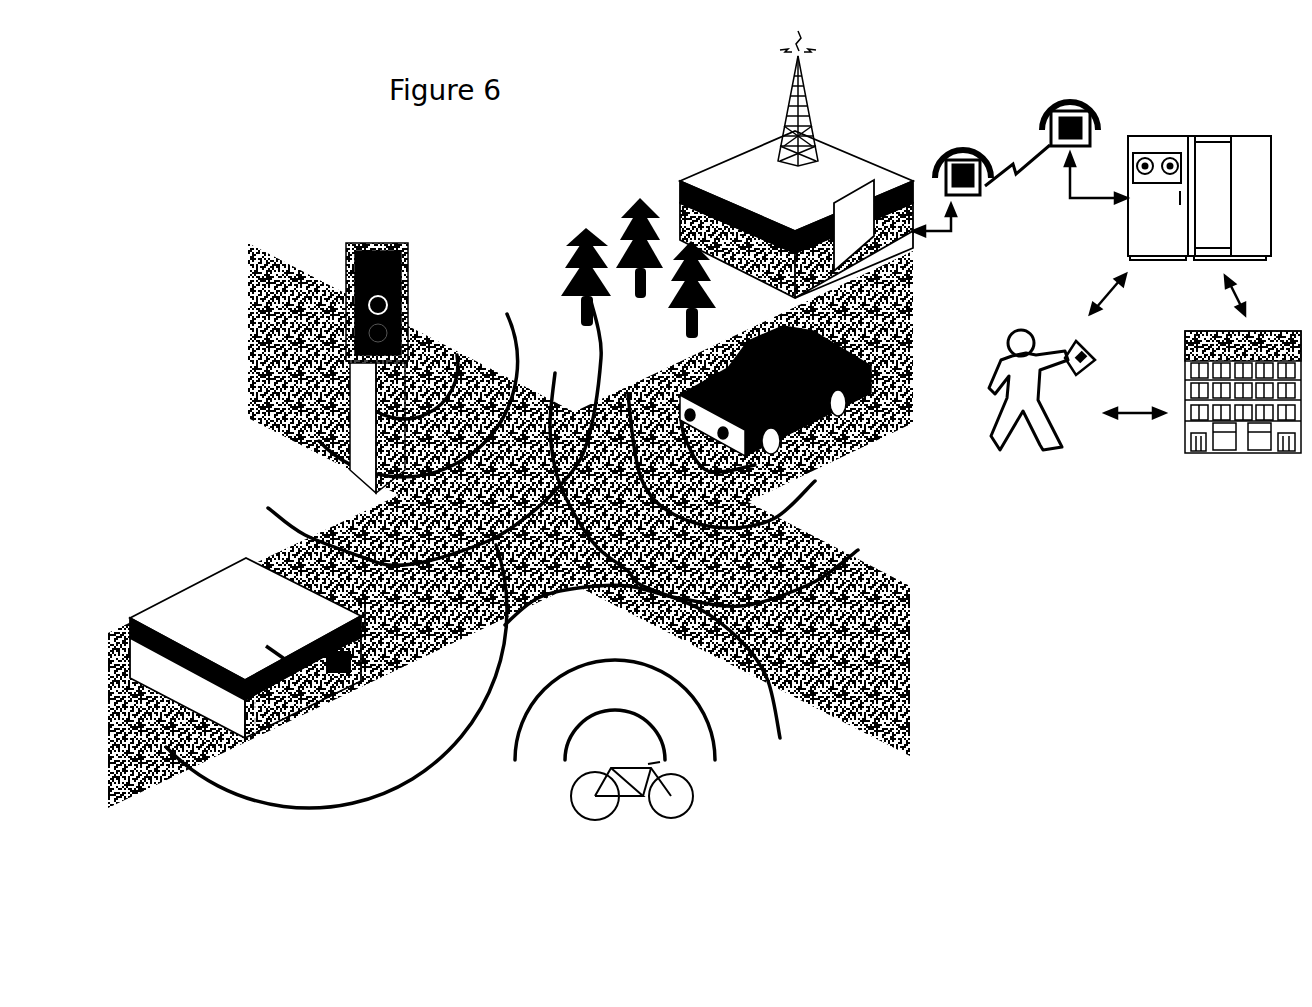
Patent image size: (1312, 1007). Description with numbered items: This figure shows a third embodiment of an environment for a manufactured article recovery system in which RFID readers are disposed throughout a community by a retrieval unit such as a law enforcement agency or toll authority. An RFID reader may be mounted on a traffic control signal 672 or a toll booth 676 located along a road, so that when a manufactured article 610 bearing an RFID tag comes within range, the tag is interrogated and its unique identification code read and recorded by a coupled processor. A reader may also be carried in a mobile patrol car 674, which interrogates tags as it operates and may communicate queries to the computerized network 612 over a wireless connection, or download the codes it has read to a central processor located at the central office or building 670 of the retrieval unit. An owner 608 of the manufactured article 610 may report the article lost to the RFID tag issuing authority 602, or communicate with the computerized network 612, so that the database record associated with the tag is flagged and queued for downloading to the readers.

The RFID tag issuing authority 602 is at (1244, 445).
The owner 608 is at (1005, 325).
The manufactured article 610 is at (633, 788).
The computerized network 612 is at (1199, 161).
The central office or building 670 is at (720, 143).
The traffic control signal 672 is at (373, 235).
The patrol car 674 is at (847, 393).
The toll booth 676 is at (153, 593).